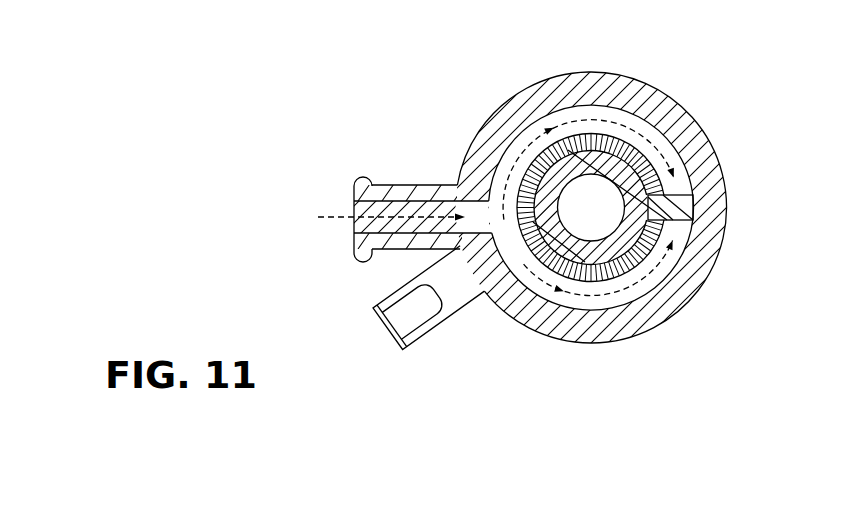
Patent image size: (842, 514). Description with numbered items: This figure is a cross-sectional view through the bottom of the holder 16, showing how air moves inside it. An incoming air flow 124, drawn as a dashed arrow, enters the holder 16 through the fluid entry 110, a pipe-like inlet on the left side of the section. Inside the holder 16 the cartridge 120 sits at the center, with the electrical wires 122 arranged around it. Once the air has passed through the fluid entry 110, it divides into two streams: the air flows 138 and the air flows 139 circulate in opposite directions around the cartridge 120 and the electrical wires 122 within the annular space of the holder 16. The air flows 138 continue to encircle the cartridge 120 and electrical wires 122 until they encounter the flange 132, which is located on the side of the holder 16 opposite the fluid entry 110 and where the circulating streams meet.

The holder 16 is at (705, 200).
The fluid entry 110 is at (410, 187).
The air flow 124 is at (337, 218).
The air flows 138 is at (522, 153).
The air flows 139 is at (668, 148).
The electrical wires 122 is at (588, 290).
The cartridge 120 is at (587, 163).
The flange 132 is at (693, 222).